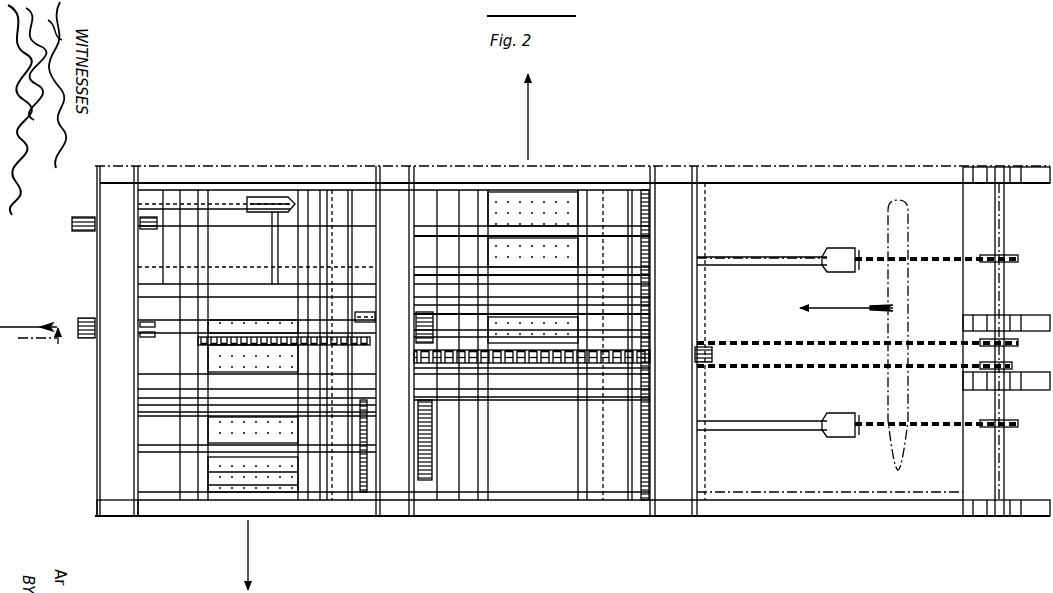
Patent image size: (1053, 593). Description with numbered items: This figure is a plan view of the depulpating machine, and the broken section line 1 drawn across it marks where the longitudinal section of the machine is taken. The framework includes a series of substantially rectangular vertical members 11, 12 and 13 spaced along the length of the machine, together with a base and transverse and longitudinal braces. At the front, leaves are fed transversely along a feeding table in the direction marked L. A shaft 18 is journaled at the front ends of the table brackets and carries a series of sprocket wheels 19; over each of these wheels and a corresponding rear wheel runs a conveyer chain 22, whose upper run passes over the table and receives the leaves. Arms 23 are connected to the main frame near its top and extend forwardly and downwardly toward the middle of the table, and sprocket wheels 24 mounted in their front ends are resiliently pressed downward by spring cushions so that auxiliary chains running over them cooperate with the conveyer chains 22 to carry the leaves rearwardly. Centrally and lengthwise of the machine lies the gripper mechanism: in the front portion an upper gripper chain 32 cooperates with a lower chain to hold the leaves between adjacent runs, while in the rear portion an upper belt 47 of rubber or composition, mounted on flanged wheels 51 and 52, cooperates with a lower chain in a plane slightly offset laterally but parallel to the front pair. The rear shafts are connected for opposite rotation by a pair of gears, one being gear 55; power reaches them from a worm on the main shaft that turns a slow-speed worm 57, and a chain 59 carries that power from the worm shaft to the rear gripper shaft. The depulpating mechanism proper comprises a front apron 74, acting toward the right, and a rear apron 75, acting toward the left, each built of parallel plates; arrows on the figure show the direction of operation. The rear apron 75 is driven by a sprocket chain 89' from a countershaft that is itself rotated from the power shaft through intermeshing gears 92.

The section line 1 is at (29, 341).
The vertical member 11 is at (682, 210).
The vertical member 12 is at (391, 207).
The vertical member 13 is at (122, 200).
The shaft 18 is at (999, 214).
The sprocket wheels 19 is at (1013, 256).
The conveyer chain 22 is at (941, 262).
The arms 23 is at (791, 255).
The sprocket wheels 24 is at (859, 258).
The direction of leaf feed L is at (910, 235).
The gripper chain 32 is at (517, 355).
The upper gripper belt 47 is at (241, 331).
The flanged wheel 51 is at (368, 316).
The flanged wheel 52 is at (90, 339).
The gear 55 is at (84, 232).
The worm 57 is at (272, 256).
The chain 59 is at (216, 214).
The apron 74 is at (558, 208).
The rear apron 75 is at (273, 474).
The sprocket chain 89' is at (368, 472).
The intermeshing gears 92 is at (423, 482).